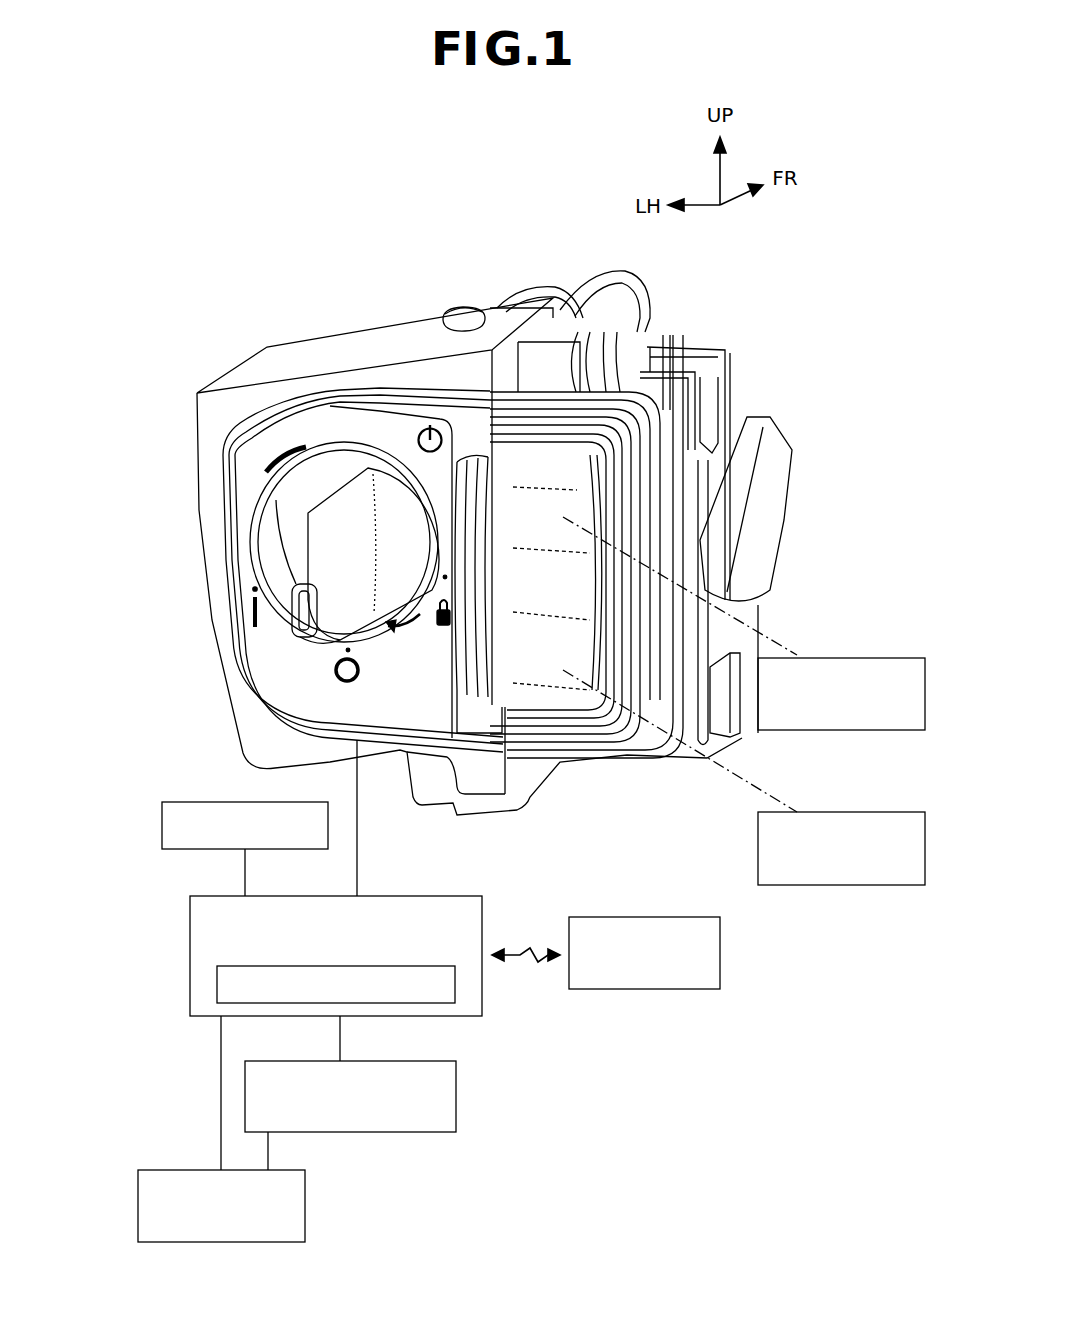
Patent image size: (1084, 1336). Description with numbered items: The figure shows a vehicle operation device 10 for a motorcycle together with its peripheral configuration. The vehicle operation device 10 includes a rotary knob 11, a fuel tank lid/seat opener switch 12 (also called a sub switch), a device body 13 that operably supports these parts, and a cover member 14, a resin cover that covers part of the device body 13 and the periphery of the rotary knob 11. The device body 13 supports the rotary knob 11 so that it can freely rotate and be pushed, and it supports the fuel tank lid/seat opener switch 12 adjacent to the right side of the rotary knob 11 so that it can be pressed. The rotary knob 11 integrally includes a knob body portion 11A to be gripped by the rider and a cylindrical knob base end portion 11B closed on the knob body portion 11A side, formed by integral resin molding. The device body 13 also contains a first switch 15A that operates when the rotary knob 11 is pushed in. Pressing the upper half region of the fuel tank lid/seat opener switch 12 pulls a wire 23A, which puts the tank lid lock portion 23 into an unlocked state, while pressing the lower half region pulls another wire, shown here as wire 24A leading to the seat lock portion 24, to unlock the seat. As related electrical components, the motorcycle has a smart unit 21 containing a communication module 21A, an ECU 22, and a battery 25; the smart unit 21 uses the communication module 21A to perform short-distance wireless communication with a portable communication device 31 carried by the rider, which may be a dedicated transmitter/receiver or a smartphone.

The vehicle operation device 10 is at (203, 268).
The rotary knob 11 is at (265, 483).
The knob body portion 11A is at (302, 512).
The knob base end portion 11B is at (272, 557).
The fuel tank lid/seat opener switch 12 is at (603, 477).
The device body 13 is at (682, 326).
The cover member 14 is at (335, 350).
The first switch 15A is at (162, 827).
The smart unit 21 is at (190, 917).
The communication module 21A is at (217, 985).
The ECU 22 is at (456, 1097).
The tank lid lock portion 23 is at (876, 658).
The wire 23A is at (760, 640).
The seat lock portion 24 is at (876, 812).
The seat lock cable 24A is at (760, 792).
The battery 25 is at (138, 1205).
The portable communication device 31 is at (640, 917).